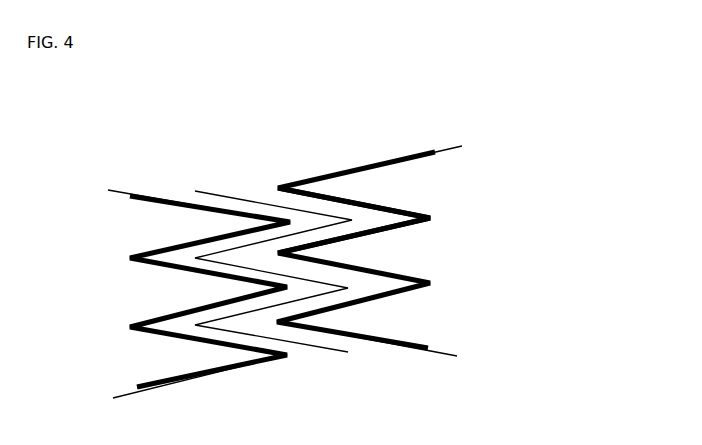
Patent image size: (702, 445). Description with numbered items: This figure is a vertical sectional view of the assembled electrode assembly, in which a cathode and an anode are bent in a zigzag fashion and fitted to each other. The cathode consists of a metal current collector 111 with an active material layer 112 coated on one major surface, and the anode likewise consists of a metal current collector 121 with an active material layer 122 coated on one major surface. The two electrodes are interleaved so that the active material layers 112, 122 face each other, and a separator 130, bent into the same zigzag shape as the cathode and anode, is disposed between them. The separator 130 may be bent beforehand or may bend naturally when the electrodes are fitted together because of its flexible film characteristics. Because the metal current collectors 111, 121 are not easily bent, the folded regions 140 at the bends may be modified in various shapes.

The current collector 111 is at (120, 192).
The active material layer 112 is at (157, 193).
The current collector 121 is at (443, 147).
The active material layer 122 is at (380, 162).
The separator 130 is at (228, 195).
The folded region 140 is at (430, 218).